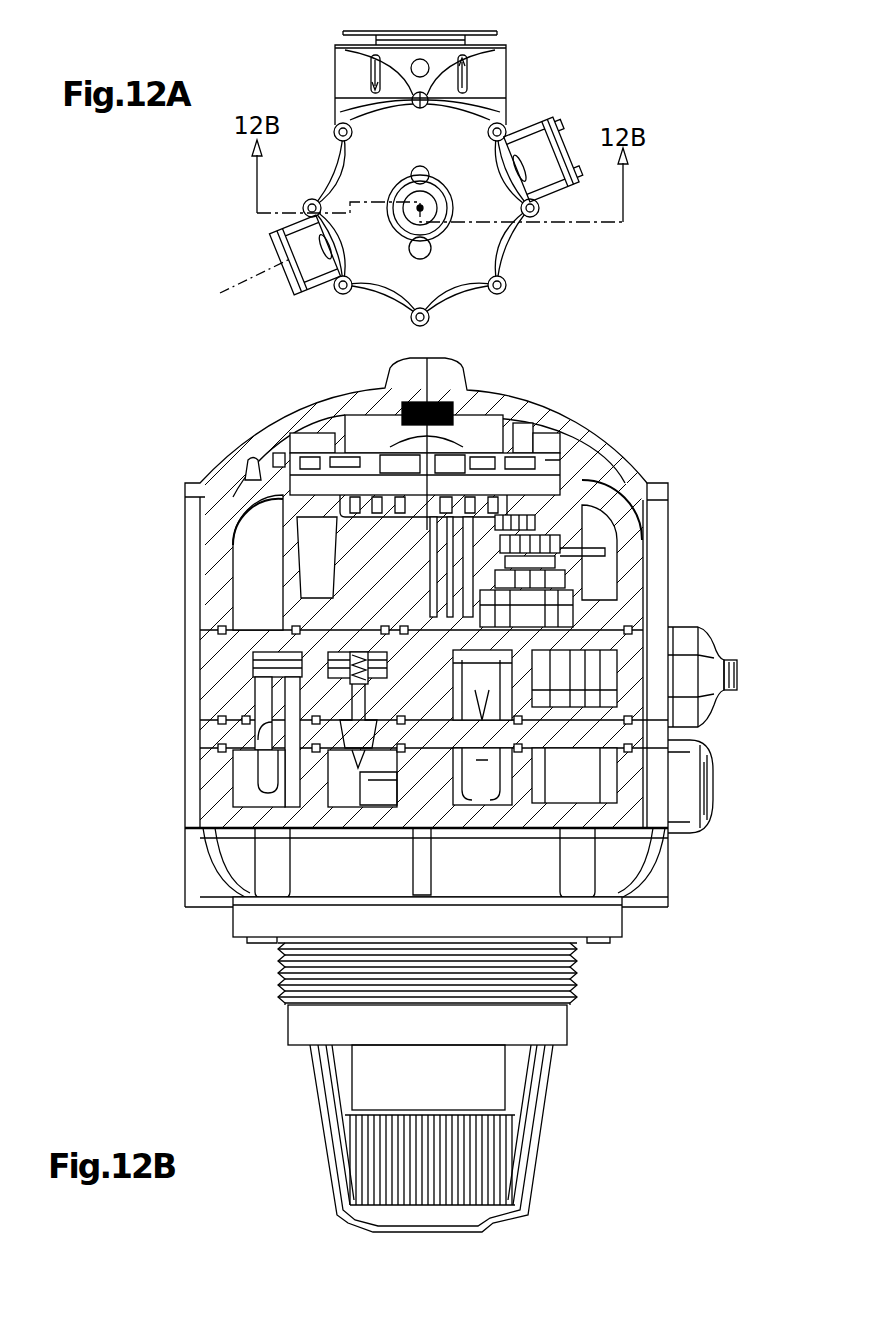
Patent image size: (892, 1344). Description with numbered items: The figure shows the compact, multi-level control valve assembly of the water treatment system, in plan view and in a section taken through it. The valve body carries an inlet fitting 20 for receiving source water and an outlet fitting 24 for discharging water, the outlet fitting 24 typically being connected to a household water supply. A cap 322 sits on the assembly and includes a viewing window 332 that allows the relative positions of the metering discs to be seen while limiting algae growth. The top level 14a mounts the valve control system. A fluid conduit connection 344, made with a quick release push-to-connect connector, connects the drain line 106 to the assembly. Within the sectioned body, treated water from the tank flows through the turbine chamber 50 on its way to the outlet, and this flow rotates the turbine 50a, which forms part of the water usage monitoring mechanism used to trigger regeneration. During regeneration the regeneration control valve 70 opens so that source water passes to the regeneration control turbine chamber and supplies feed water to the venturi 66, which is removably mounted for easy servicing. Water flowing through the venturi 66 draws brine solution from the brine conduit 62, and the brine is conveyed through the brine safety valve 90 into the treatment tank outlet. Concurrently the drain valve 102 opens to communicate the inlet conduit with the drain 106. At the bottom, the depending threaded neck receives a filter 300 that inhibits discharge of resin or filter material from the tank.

In FIG. 12A, the inlet fitting 20 is at (357, 73).
In FIG. 12A, the outlet fitting 24 is at (487, 67).
In FIG. 12A, the venturi 66 is at (553, 150).
In FIG. 12B, the venturi 66 is at (742, 660).
In FIG. 12A, the fluid conduit connection 344 is at (295, 248).
In FIG. 12B, the fluid conduit connection 344 is at (710, 802).
In FIG. 12A, the drain 106 is at (287, 259).
In FIG. 12A, the viewing window 332 is at (432, 250).
In FIG. 12A, the cap 322 is at (404, 295).
In FIG. 12B, the turbine chamber 50 is at (595, 522).
In FIG. 12B, the turbine 50a is at (600, 612).
In FIG. 12B, the regeneration control valve 70 is at (330, 658).
In FIG. 12B, the drain valve 102 is at (267, 705).
In FIG. 12B, the brine conduit 62 is at (714, 773).
In FIG. 12B, the brine safety valve 90 is at (630, 835).
In FIG. 12B, the top level 14a is at (578, 982).
In FIG. 12B, the filter 300 is at (480, 1164).